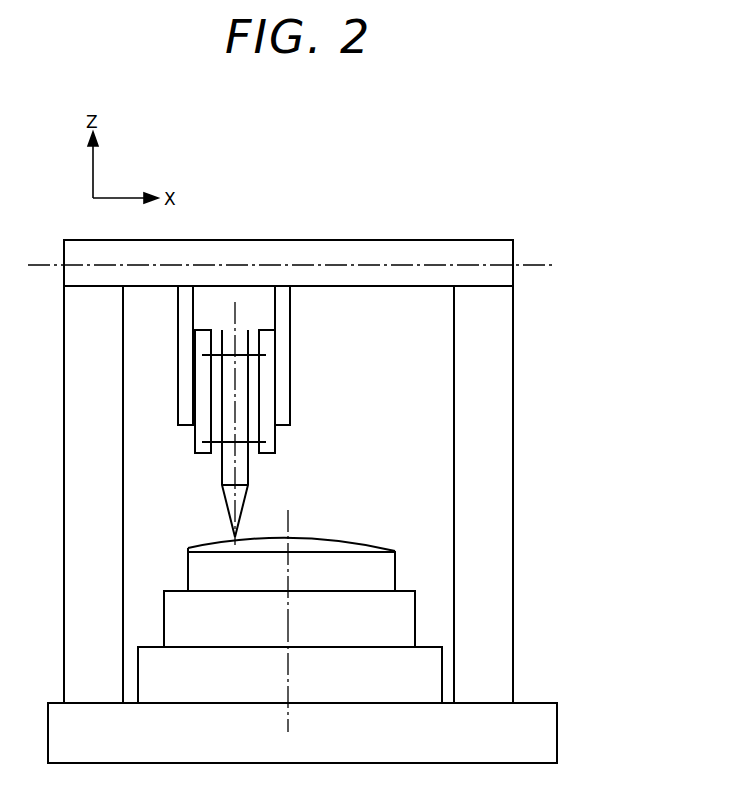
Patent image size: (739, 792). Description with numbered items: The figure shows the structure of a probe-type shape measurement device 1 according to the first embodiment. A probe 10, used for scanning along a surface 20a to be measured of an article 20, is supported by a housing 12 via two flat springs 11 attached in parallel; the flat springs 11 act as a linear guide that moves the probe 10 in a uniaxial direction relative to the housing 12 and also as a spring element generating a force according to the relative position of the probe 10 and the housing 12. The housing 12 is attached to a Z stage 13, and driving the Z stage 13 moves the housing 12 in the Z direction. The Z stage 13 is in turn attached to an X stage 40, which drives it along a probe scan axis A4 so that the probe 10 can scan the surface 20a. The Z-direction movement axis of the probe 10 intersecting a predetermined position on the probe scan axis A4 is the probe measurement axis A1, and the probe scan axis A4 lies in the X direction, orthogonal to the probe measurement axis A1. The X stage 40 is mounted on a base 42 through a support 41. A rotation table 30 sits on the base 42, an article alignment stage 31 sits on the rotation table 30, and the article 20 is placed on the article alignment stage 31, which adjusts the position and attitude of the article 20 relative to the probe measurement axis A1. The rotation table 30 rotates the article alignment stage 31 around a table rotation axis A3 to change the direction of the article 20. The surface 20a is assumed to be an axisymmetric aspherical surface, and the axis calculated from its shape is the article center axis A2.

The probe-type shape measurement device 1 is at (398, 170).
The probe 10 is at (227, 470).
The flat springs 11 is at (261, 438).
The housing 12 is at (197, 432).
The Z stage 13 is at (283, 365).
The article to be measured 20 is at (318, 533).
The surface to be measured 20a is at (347, 535).
The rotation table 30 is at (417, 675).
The article alignment stage 31 is at (400, 616).
The X stage 40 is at (300, 256).
The support 41 is at (505, 427).
The base 42 is at (548, 730).
The probe measurement axis A1 is at (237, 313).
The article center axis A2 is at (291, 521).
The table rotation axis A3 is at (291, 680).
The probe scan axis A4 is at (458, 265).